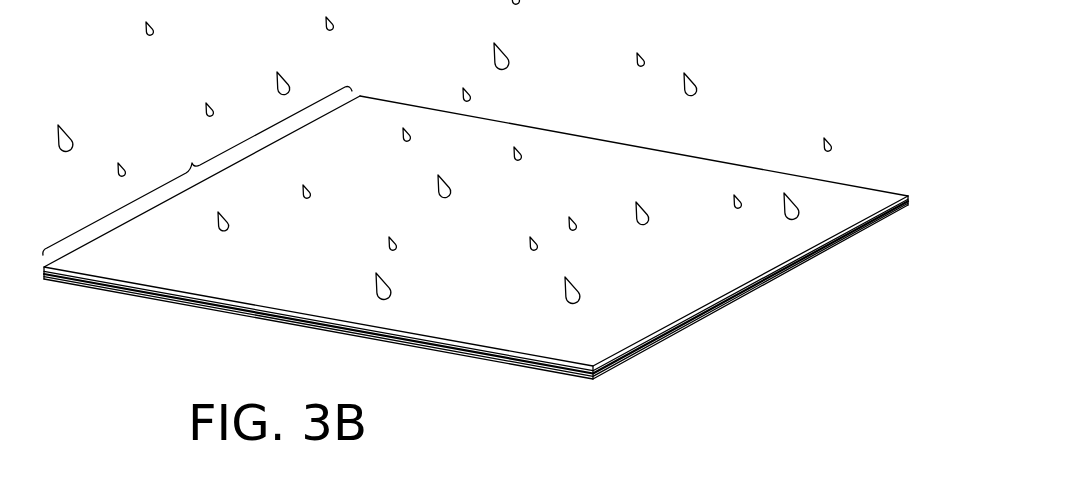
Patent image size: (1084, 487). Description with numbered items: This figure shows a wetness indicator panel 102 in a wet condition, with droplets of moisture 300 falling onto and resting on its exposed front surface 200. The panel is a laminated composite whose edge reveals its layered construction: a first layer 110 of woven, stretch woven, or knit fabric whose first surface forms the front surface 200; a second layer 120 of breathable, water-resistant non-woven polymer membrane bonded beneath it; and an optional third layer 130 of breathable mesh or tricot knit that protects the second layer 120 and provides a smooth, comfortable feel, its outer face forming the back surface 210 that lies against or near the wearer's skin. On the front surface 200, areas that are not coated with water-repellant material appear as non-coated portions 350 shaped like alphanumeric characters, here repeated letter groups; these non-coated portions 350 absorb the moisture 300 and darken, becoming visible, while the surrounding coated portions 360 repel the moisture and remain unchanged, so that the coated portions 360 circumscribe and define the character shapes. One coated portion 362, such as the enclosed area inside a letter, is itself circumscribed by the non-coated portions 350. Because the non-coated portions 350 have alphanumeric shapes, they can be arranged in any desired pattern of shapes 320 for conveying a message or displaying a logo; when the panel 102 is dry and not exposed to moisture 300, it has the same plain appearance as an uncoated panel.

The wetness indicator panel 102 is at (488, 199).
The first layer 110 is at (909, 196).
The second layer 120 is at (912, 200).
The third layer 130 is at (912, 207).
The front surface 200 is at (125, 272).
The back surface 210 is at (213, 310).
The moisture 300 is at (506, 57).
The pattern of shapes 320 is at (197, 171).
The non-coated portions 350 is at (488, 188).
The coated portions 360 is at (689, 156).
The coated portion 362 is at (553, 206).